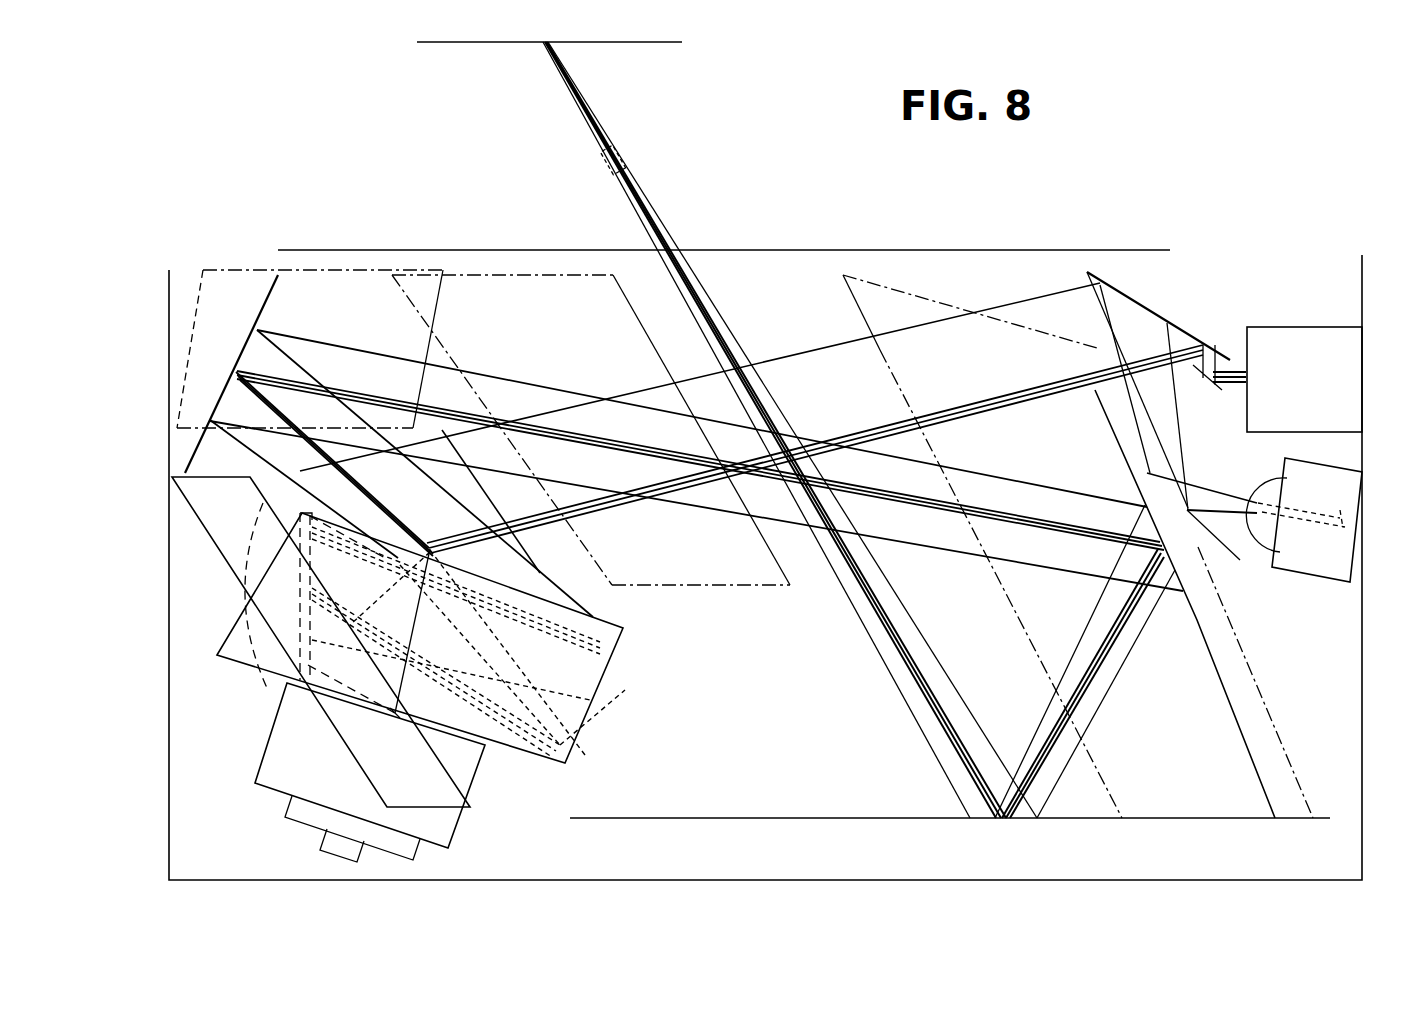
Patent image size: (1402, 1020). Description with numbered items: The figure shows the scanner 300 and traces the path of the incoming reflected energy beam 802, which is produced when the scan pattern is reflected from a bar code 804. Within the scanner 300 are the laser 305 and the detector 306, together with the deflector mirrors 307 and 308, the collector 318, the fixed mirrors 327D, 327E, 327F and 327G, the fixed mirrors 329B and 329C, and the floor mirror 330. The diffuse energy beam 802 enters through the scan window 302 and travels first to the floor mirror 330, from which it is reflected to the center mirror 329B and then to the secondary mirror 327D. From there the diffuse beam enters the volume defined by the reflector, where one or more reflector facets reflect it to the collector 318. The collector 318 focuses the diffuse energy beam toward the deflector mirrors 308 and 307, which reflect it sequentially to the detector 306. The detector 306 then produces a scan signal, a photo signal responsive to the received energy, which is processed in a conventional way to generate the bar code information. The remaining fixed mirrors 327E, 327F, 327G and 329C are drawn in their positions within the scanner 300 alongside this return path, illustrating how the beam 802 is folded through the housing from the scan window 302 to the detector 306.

The scanner 300 is at (266, 110).
The scan window 302 is at (948, 250).
The laser 305 is at (1283, 327).
The detector 306 is at (1298, 572).
The deflector mirror 307 is at (1211, 392).
The deflector mirror 308 is at (1128, 297).
The collector 318 is at (265, 685).
The secondary mirror 327D is at (217, 397).
The fixed mirror 327E is at (238, 270).
The fixed mirror 327F is at (380, 755).
The fixed mirror 327G is at (712, 585).
The center mirror 329B is at (1236, 718).
The fixed mirror 329C is at (860, 313).
The floor mirror 330 is at (738, 818).
The reflected energy beam 802 is at (592, 117).
The bar code 804 is at (468, 42).